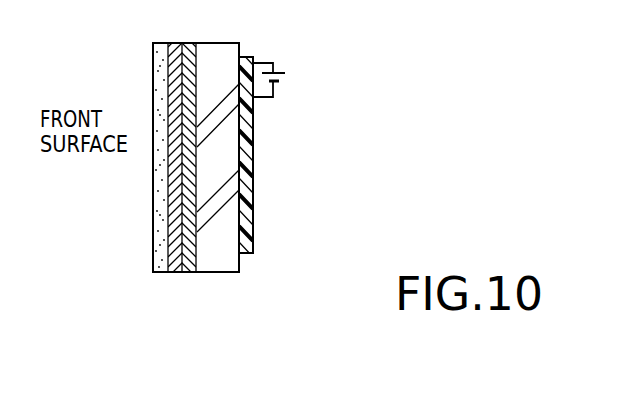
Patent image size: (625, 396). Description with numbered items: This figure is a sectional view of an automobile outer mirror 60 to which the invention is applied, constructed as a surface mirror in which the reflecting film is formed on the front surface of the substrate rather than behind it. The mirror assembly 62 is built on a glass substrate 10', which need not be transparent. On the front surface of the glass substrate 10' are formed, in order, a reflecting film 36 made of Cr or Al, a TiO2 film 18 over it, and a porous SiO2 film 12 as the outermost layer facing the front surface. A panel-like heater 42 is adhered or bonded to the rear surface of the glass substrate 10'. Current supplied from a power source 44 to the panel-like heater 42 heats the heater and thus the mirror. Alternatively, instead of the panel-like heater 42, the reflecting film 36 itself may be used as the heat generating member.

The glass substrate 10' is at (221, 184).
The porous SiO2 film 12 is at (163, 272).
The TiO2 film 18 is at (175, 272).
The reflecting film 36 is at (188, 272).
The panel-like heater 42 is at (253, 190).
The power source 44 is at (280, 85).
The automobile outer mirror 60 is at (362, 68).
The mirror assembly 62 is at (353, 176).